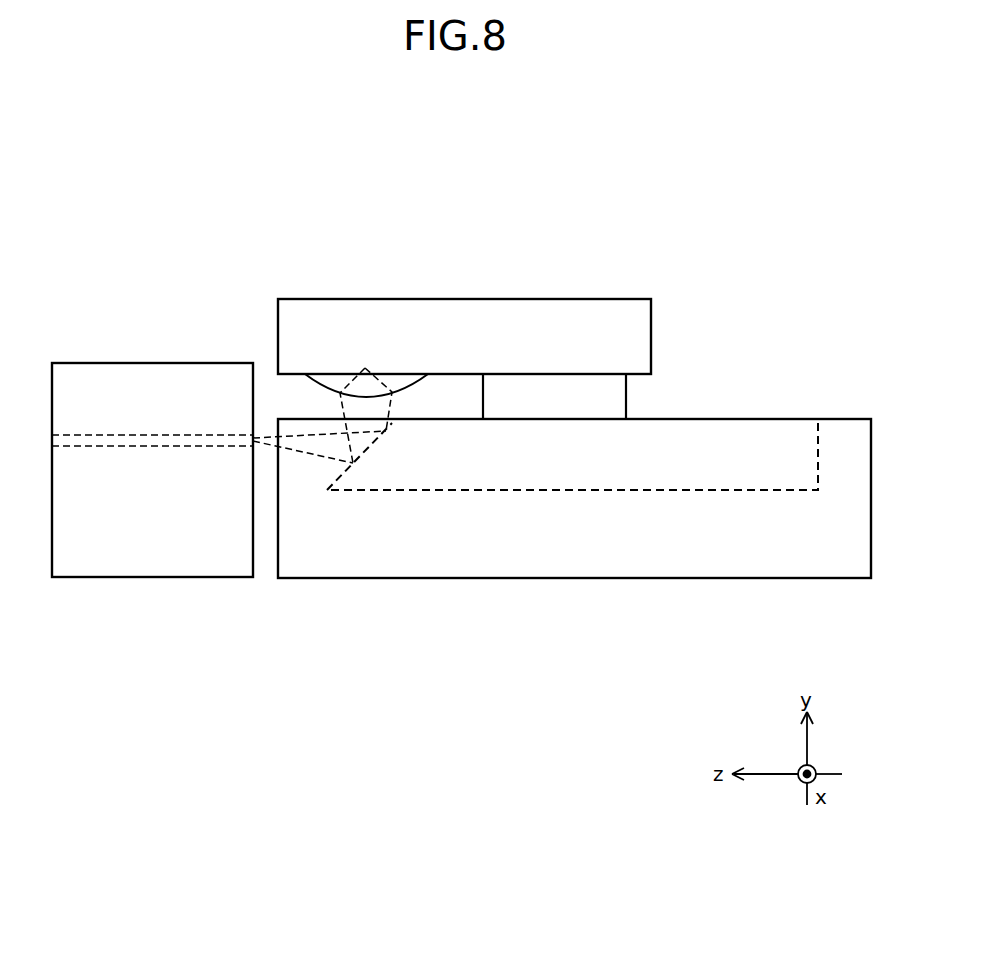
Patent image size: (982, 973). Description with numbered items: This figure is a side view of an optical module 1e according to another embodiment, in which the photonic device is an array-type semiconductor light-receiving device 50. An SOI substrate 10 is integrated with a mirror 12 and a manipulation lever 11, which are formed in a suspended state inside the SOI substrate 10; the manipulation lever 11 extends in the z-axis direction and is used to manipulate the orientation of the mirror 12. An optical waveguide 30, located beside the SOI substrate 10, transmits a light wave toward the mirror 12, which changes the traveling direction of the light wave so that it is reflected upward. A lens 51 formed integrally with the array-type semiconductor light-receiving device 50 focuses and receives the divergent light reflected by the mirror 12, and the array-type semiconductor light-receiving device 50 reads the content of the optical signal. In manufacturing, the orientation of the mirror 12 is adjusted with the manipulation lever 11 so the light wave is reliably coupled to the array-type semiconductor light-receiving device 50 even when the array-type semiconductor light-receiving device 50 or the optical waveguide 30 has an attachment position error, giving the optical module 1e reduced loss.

The optical module 1e is at (728, 219).
The array-type semiconductor light-receiving device 50 is at (555, 307).
The lens 51 is at (328, 377).
The optical waveguide 30 is at (150, 435).
The SOI substrate 10 is at (842, 418).
The manipulation lever 11 is at (512, 491).
The mirror 12 is at (370, 452).